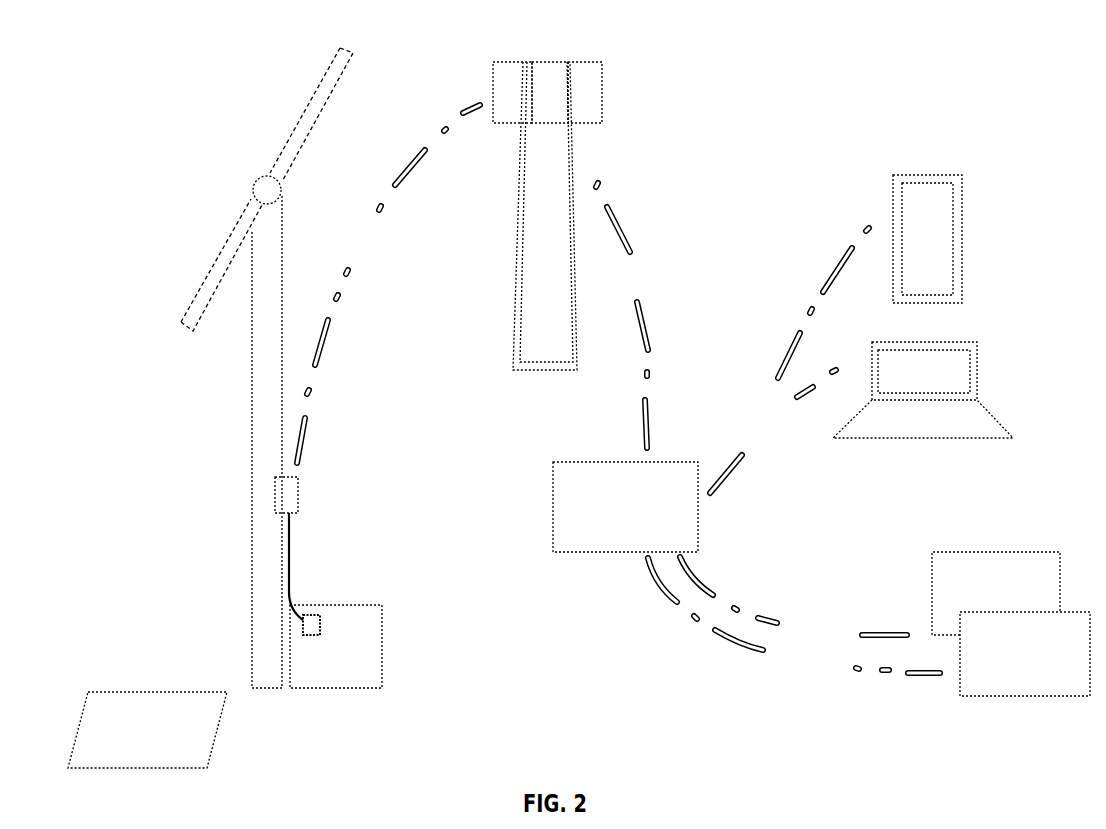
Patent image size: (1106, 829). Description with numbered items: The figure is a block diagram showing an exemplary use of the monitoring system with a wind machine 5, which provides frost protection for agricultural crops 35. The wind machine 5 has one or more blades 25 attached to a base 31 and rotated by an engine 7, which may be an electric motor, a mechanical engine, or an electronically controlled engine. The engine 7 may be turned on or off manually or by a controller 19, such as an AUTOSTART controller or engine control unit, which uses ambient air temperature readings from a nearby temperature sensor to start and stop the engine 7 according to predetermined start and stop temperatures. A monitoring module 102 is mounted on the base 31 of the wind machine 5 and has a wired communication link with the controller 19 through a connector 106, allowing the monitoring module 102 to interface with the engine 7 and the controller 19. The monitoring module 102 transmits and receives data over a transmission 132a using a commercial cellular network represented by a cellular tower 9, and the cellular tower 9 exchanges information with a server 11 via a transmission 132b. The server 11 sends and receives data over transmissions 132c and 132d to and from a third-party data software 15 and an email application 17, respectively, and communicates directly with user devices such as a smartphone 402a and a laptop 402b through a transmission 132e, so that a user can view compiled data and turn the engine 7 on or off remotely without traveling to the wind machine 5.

The wind machine 5 is at (265, 368).
The blades 25 is at (328, 98).
The base 31 is at (262, 462).
The monitoring module 102 is at (300, 495).
The connector 106 is at (292, 553).
The controller 19 is at (312, 616).
The engine 7 is at (344, 658).
The agricultural crops 35 is at (158, 741).
The cellular tower 9 is at (586, 80).
The server 11 is at (637, 521).
The third-party data software 15 is at (1034, 668).
The email application 17 is at (1007, 593).
The smartphone 402a is at (948, 213).
The laptop 402b is at (962, 384).
The transmission 132a is at (388, 284).
The transmission 132b is at (628, 315).
The transmission 132c is at (794, 620).
The transmission 132d is at (793, 599).
The transmission 132e is at (789, 360).